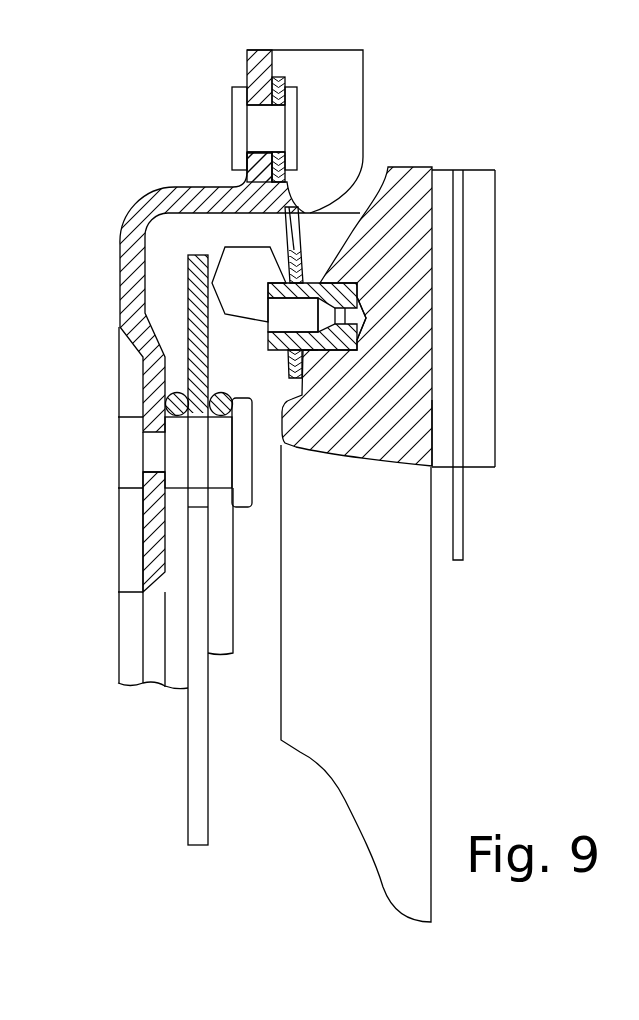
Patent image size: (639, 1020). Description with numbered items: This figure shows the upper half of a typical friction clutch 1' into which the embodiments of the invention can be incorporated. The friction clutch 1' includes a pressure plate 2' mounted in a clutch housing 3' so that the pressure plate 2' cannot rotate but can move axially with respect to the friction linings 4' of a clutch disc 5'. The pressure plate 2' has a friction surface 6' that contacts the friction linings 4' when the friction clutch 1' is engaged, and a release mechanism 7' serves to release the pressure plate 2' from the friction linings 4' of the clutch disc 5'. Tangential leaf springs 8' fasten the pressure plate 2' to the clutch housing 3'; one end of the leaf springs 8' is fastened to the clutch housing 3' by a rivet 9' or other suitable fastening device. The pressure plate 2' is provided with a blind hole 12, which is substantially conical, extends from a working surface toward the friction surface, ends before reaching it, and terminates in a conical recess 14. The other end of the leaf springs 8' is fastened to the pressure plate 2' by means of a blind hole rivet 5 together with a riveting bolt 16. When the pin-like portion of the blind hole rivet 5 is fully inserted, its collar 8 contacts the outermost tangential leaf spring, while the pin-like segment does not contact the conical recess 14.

The friction clutch 1' is at (555, 280).
The pressure plate 2' is at (356, 544).
The clutch housing 3' is at (216, 421).
The friction linings 4' is at (463, 287).
The blind hole rivet 5 is at (439, 346).
The clutch disc 5' is at (486, 513).
The friction surface 6' is at (486, 433).
The release mechanism 7' is at (180, 550).
The collar 8 is at (264, 292).
The tangential leaf springs 8' is at (323, 131).
The rivet 9' is at (228, 110).
The blind hole 12 is at (317, 352).
The conical recess 14 is at (363, 305).
The riveting bolt 16 is at (275, 306).